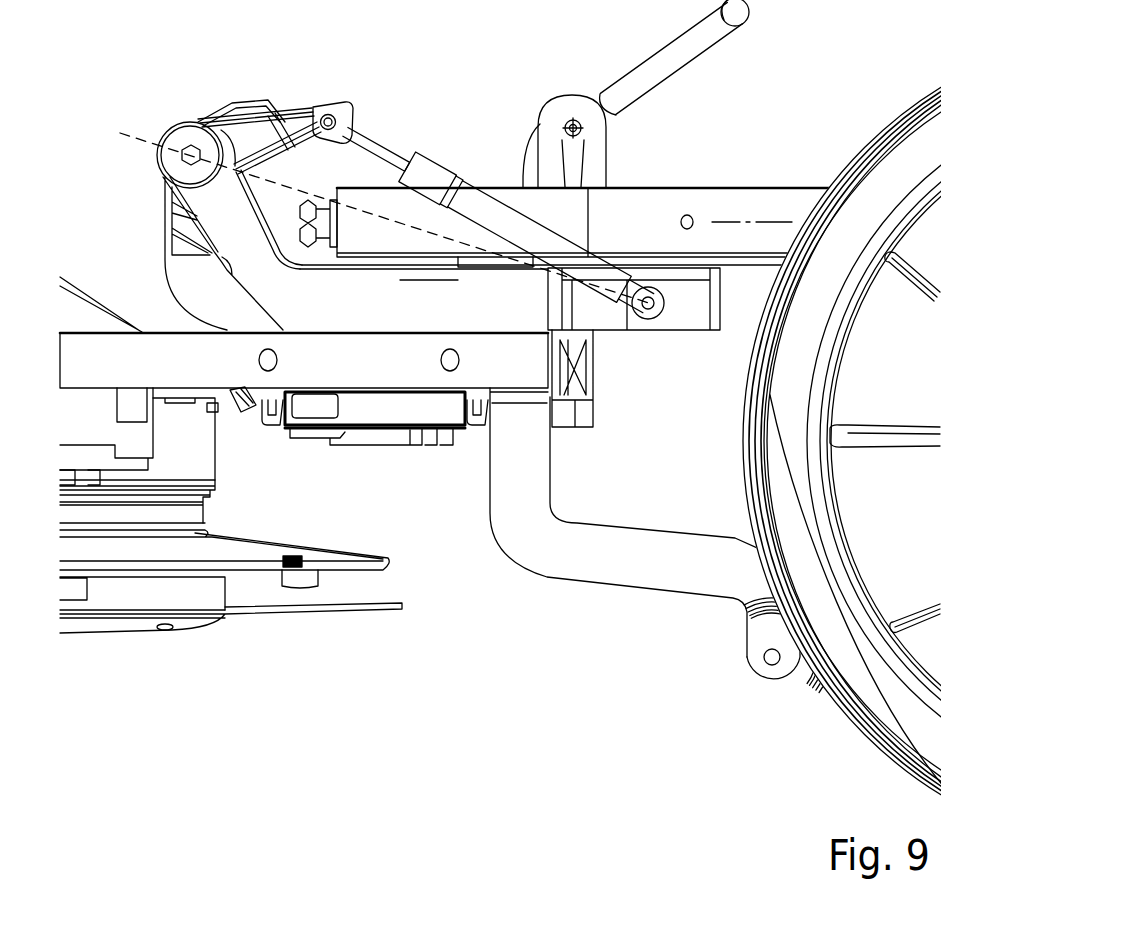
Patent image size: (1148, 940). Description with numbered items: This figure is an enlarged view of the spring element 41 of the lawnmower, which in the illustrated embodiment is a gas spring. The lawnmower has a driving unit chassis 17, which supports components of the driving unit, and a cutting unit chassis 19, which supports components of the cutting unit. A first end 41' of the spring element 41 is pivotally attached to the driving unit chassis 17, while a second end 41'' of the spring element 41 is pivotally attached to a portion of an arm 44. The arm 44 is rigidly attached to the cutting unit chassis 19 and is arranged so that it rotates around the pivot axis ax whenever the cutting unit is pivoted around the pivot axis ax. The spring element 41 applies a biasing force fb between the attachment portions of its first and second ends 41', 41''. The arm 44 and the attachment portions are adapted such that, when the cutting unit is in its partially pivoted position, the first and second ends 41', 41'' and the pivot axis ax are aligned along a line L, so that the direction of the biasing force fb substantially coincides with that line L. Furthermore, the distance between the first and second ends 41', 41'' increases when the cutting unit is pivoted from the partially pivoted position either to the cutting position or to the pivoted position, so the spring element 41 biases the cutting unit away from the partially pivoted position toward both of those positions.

The driving unit chassis 17 is at (734, 200).
The cutting unit chassis 19 is at (165, 336).
The spring element 41 is at (487, 205).
The first end of the spring element 41' is at (645, 337).
The second end of the spring element 41'' is at (357, 105).
The arm 44 is at (258, 133).
The pivot axis ax is at (190, 150).
The biasing force fb is at (278, 86).
The line L is at (141, 137).